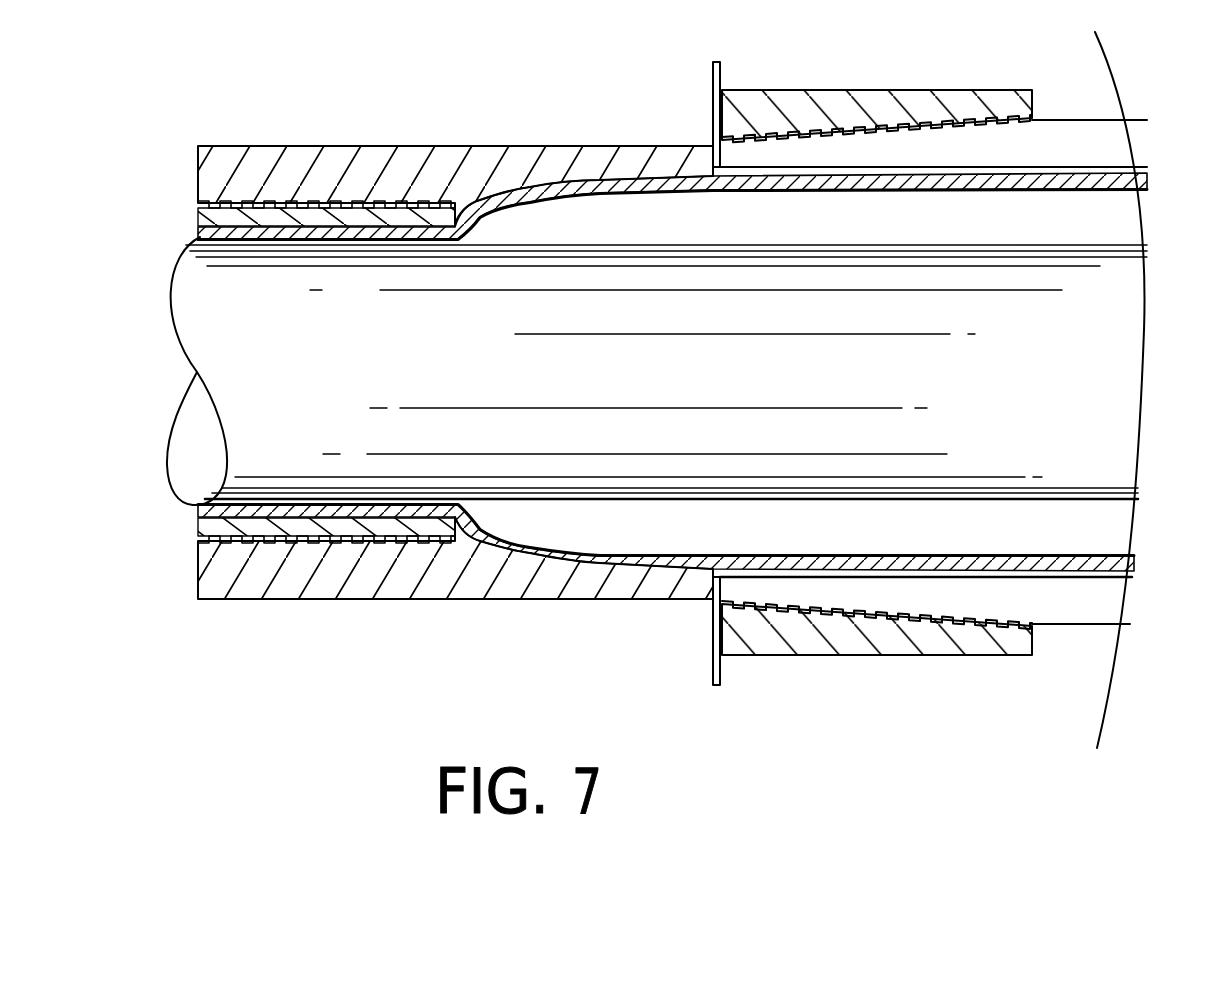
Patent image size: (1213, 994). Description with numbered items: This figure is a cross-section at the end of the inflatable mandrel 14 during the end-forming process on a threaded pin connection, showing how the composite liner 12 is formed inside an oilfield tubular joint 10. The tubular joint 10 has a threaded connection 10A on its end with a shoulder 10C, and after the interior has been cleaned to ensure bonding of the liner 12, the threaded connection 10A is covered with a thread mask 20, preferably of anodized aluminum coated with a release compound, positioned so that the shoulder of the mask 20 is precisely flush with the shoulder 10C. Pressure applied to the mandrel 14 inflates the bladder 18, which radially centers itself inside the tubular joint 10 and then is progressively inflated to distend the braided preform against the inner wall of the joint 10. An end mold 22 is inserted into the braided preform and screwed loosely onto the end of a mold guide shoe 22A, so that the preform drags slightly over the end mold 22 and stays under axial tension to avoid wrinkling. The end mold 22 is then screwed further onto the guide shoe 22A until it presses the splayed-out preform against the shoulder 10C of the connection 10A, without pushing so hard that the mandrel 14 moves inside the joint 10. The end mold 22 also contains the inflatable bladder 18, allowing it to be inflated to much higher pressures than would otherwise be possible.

The oilfield tubular joint 10 is at (1058, 120).
The threaded connection 10A is at (930, 91).
The shoulder of threaded connection 10C is at (723, 188).
The composite liner 12 is at (712, 112).
The inflatable mandrel 14 is at (172, 302).
The inflatable bladder 18 is at (1005, 190).
The thread mask 20 is at (822, 90).
The end mold 22 is at (262, 146).
The mold guide shoe 22A is at (210, 212).